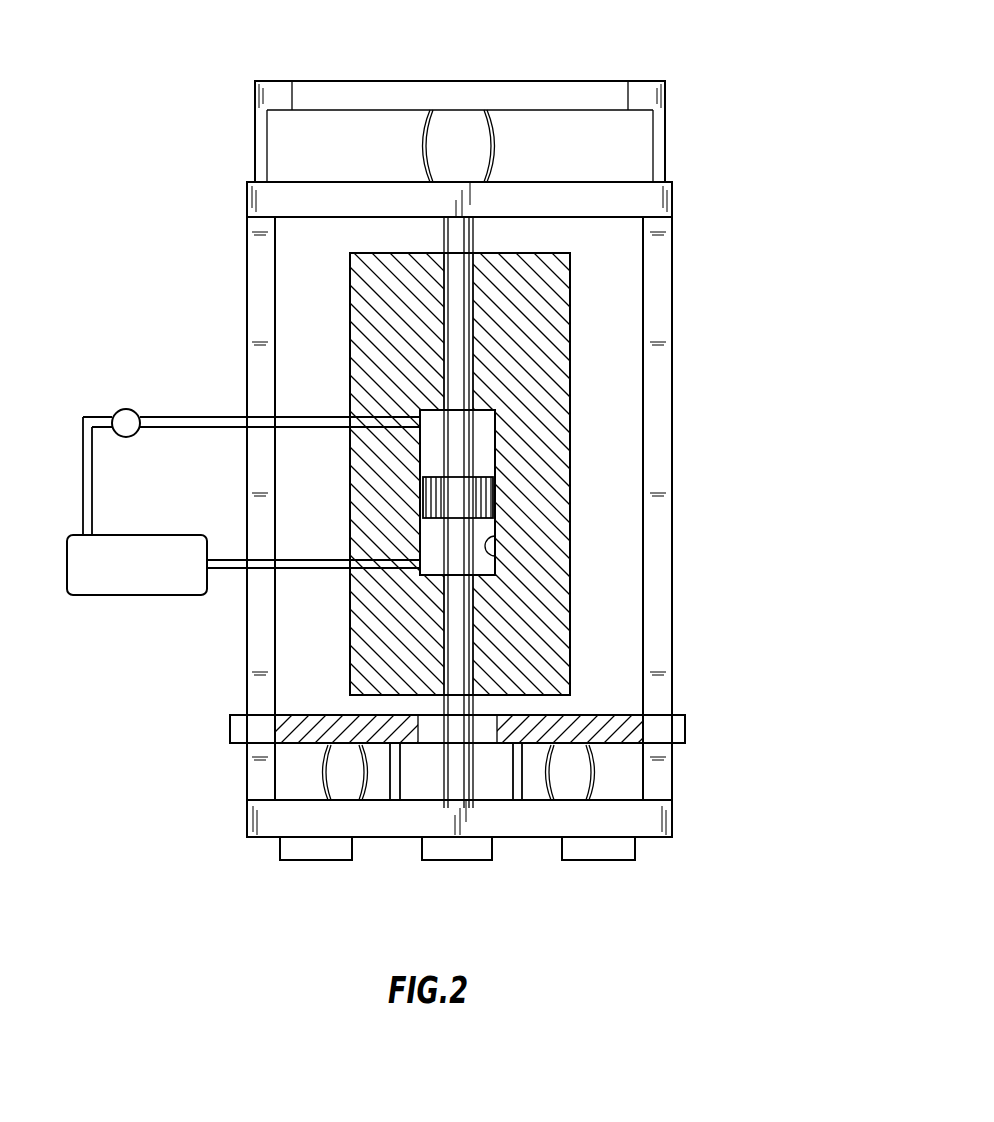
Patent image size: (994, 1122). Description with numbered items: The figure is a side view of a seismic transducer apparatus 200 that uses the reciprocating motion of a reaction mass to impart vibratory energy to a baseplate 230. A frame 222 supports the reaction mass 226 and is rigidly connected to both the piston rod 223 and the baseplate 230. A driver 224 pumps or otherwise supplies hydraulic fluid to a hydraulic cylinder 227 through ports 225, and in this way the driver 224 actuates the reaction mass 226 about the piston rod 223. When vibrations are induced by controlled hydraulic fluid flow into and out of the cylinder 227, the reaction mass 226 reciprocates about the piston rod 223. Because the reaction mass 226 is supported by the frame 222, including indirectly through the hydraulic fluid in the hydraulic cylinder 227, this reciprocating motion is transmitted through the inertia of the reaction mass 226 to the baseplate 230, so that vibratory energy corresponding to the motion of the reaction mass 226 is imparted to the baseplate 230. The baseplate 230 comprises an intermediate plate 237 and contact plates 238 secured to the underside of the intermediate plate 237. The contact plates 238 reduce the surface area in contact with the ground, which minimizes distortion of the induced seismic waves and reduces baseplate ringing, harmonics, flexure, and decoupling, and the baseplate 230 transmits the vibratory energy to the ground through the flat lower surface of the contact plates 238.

The seismic transducer apparatus 200 is at (762, 94).
The frame 222 is at (673, 248).
The piston rod 223 is at (475, 235).
The driver 224 is at (120, 406).
The ports 225 is at (202, 417).
The reaction mass 226 is at (569, 450).
The hydraulic cylinder 227 is at (497, 555).
The baseplate 230 is at (690, 814).
The intermediate plate 237 is at (523, 838).
The contact plates 238 is at (278, 853).